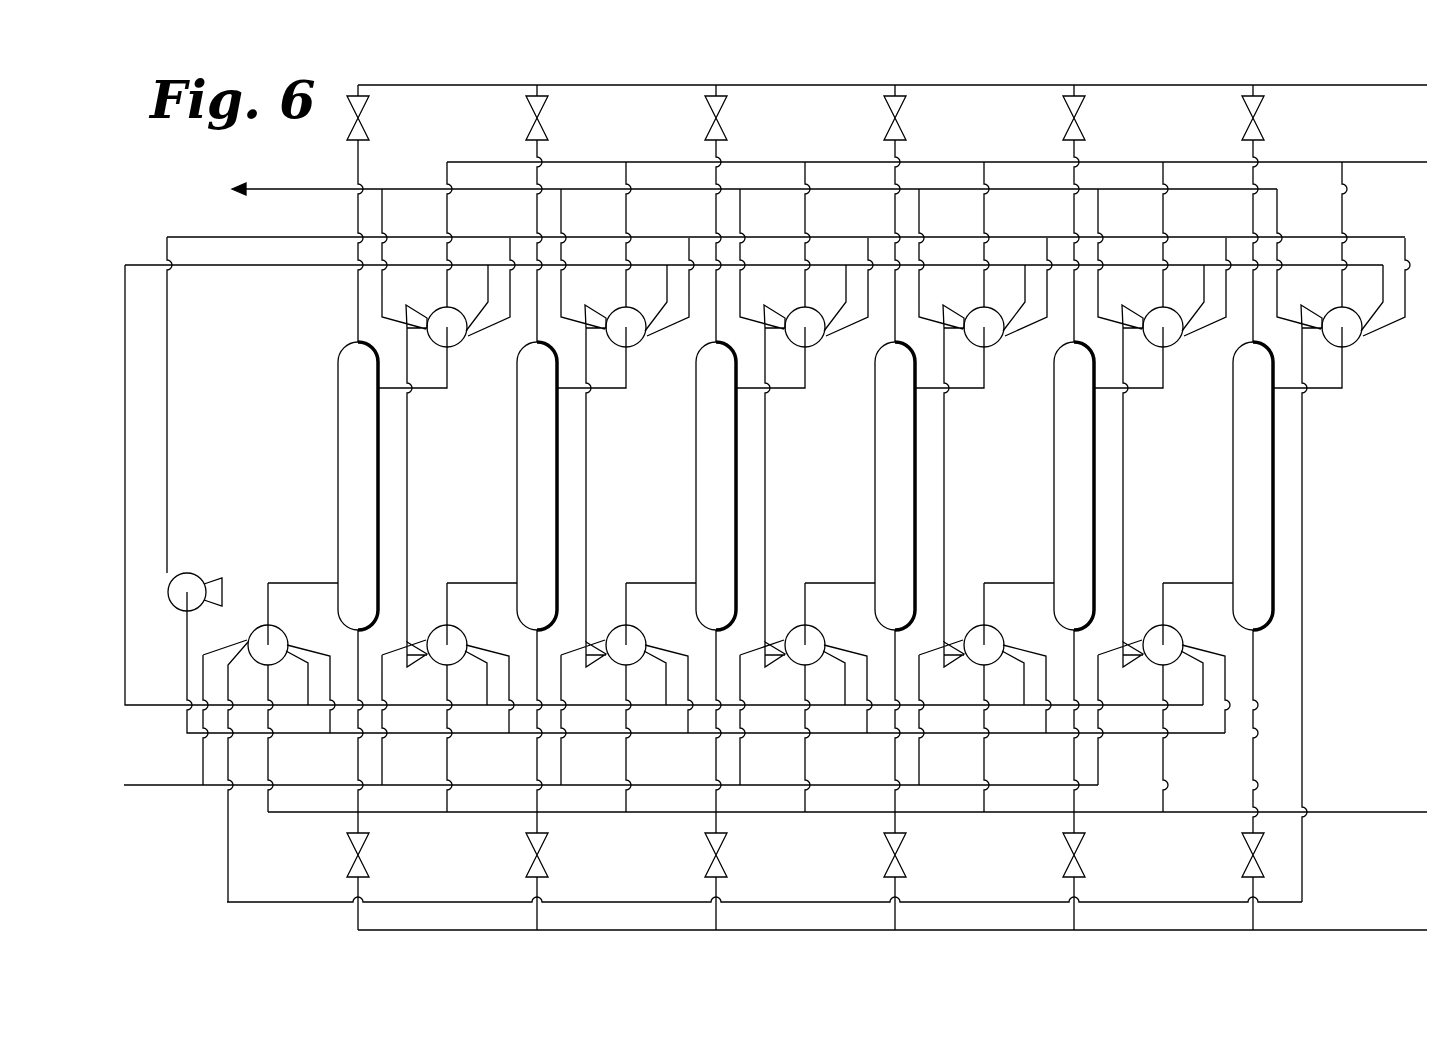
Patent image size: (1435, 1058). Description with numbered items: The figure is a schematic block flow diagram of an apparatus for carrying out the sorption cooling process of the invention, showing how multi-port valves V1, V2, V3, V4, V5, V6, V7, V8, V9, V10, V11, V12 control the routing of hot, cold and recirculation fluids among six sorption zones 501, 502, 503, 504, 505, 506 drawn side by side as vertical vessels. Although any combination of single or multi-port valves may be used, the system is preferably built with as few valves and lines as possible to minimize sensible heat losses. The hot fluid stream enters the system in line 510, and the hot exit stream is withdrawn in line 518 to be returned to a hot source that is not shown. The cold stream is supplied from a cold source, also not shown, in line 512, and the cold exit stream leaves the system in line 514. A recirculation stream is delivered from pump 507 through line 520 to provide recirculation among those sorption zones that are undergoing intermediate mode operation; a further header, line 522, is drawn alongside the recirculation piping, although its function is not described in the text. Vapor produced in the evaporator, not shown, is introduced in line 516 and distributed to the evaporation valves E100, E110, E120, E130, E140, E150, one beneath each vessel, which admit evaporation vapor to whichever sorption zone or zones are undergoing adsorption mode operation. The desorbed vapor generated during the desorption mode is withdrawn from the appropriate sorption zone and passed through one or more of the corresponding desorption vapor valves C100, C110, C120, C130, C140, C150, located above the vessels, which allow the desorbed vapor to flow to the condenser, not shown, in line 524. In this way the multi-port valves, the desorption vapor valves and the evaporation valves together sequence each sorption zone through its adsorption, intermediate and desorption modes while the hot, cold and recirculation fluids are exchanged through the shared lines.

The sorption zone 501 is at (338, 492).
The sorption zone 502 is at (517, 492).
The sorption zone 503 is at (696, 492).
The sorption zone 504 is at (875, 492).
The sorption zone 505 is at (1054, 492).
The sorption zone 506 is at (1233, 492).
The pump 507 is at (185, 573).
The hot fluid line 510 is at (168, 787).
The cold stream line 512 is at (1338, 812).
The cold exit stream line 514 is at (1358, 160).
The evaporator vapor line 516 is at (1333, 930).
The hot exit stream line 518 is at (326, 189).
The recirculation line 520 is at (165, 372).
The line 522 is at (207, 266).
The condenser line 524 is at (1304, 84).
The multi-port valve V1 is at (459, 345).
The multi-port valve V2 is at (638, 345).
The multi-port valve V3 is at (817, 345).
The multi-port valve V4 is at (996, 345).
The multi-port valve V5 is at (1175, 345).
The multi-port valve V6 is at (1354, 345).
The multi-port valve V7 is at (278, 626).
The multi-port valve V8 is at (471, 608).
The multi-port valve V9 is at (650, 608).
The multi-port valve V10 is at (829, 608).
The multi-port valve V11 is at (1008, 608).
The multi-port valve V12 is at (1187, 608).
The desorption vapor valve C100 is at (369, 127).
The desorption vapor valve C110 is at (548, 127).
The desorption vapor valve C120 is at (727, 127).
The desorption vapor valve C130 is at (906, 127).
The desorption vapor valve C140 is at (1085, 127).
The desorption vapor valve C150 is at (1264, 127).
The evaporation valve E100 is at (369, 857).
The evaporation valve E110 is at (548, 857).
The evaporation valve E120 is at (727, 857).
The evaporation valve E130 is at (906, 857).
The evaporation valve E140 is at (1085, 858).
The evaporation valve E150 is at (1243, 848).